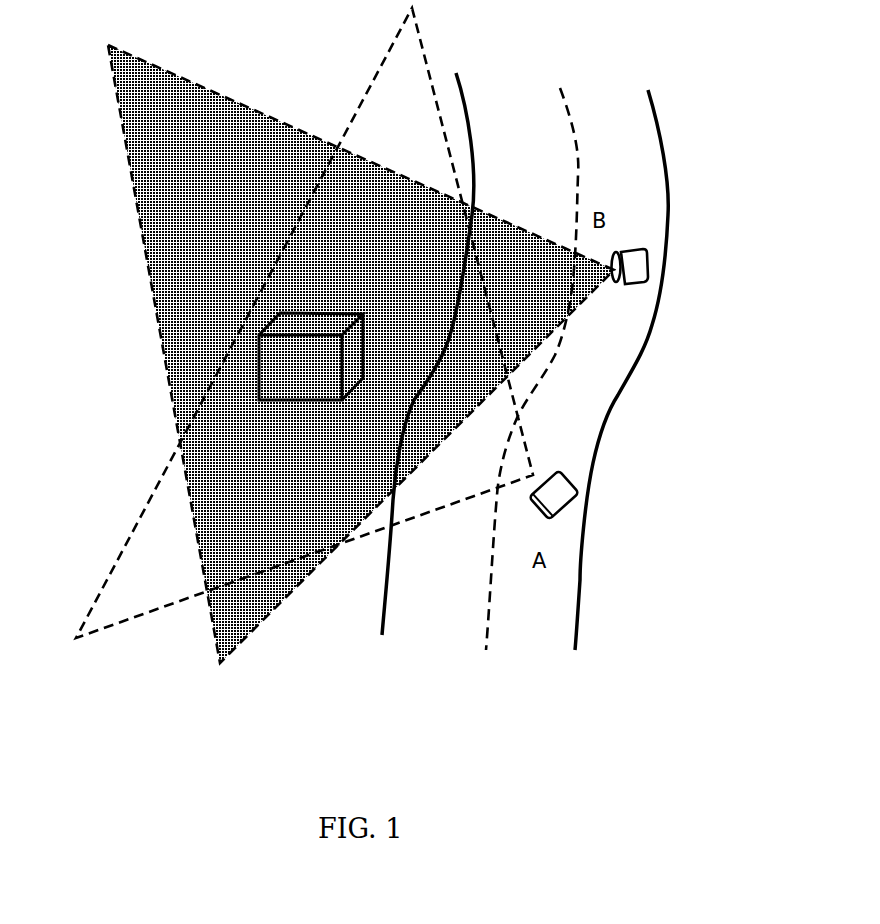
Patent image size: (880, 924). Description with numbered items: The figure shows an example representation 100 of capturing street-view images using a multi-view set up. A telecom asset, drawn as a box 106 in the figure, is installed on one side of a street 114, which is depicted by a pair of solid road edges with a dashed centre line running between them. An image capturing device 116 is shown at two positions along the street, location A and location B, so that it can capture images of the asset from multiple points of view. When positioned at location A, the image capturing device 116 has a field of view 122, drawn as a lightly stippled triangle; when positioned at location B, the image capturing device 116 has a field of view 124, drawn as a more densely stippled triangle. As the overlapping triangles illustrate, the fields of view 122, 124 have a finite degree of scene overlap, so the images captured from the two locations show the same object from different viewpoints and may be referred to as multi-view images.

The example representation 100 is at (519, 712).
The object 106 is at (311, 356).
The street 114 is at (525, 361).
The image capturing device 116 is at (626, 250).
The field of view 122 is at (146, 513).
The field of view 124 is at (136, 193).